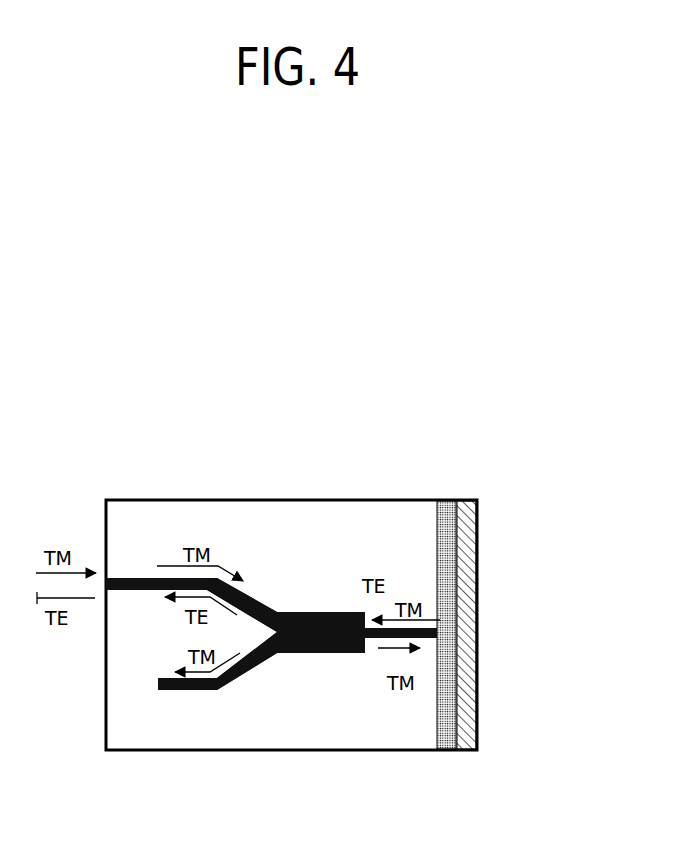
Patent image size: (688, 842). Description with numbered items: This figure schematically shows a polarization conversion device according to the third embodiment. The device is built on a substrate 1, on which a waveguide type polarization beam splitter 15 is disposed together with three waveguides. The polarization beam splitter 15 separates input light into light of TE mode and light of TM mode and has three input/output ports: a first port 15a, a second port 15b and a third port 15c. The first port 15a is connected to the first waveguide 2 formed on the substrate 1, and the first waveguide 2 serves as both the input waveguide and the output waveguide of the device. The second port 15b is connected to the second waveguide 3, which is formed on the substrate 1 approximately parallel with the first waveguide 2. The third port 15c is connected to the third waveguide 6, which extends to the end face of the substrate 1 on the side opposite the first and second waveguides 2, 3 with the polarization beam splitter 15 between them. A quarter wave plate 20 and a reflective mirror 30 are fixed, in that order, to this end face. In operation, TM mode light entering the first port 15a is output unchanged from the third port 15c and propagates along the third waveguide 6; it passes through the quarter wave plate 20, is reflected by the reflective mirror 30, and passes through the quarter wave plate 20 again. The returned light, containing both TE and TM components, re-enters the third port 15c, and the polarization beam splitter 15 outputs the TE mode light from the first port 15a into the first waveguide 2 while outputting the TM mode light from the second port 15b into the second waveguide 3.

The substrate 1 is at (217, 500).
The first waveguide 2 is at (131, 578).
The second waveguide 3 is at (185, 690).
The third waveguide 6 is at (433, 640).
The waveguide type polarization beam splitter 15 is at (317, 612).
The first port 15a is at (256, 595).
The second port 15b is at (252, 668).
The third port 15c is at (368, 640).
The 1/4 wave plate 20 is at (442, 500).
The reflective mirror 30 is at (467, 500).